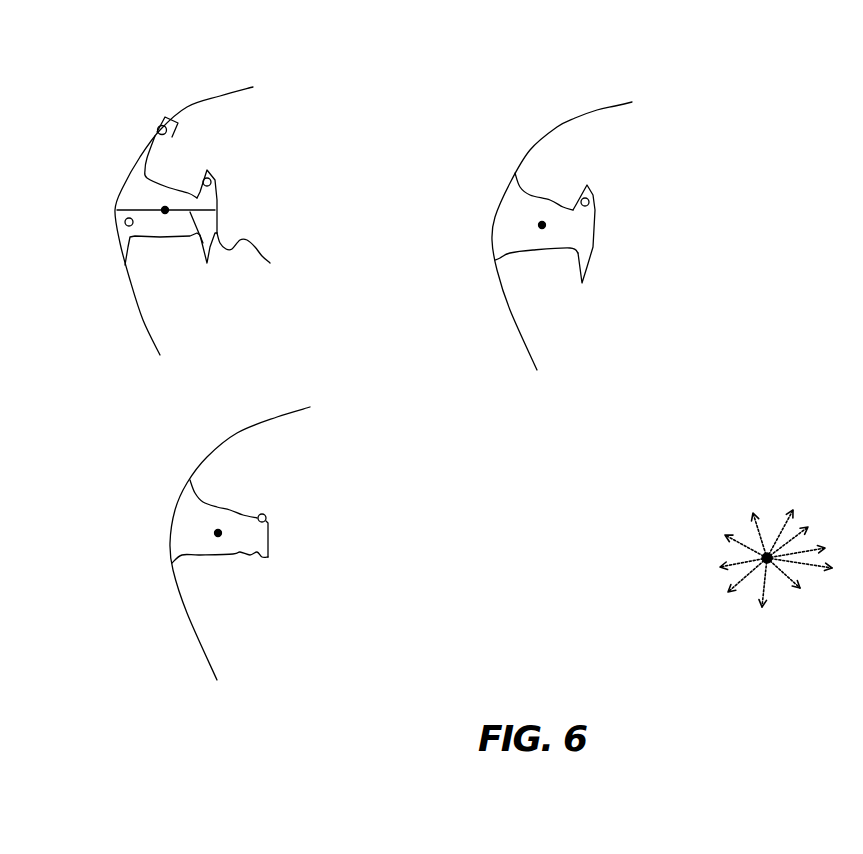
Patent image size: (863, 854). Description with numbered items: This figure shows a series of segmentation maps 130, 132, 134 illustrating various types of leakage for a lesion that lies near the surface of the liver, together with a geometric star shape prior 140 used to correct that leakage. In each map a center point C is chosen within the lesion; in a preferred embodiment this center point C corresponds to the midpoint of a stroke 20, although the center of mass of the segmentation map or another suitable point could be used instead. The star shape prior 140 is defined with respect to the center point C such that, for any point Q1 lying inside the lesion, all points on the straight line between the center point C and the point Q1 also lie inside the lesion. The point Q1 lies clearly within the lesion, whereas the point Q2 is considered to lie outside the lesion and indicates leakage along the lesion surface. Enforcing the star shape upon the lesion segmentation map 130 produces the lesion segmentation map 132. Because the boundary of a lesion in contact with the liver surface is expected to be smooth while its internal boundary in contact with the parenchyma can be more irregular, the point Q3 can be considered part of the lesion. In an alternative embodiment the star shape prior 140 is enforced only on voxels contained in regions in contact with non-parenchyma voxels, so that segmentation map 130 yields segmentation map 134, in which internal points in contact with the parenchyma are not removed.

The lesion segmentation map 130 is at (93, 127).
The lesion segmentation map 132 is at (159, 460).
The segmentation map 134 is at (483, 162).
The star shape prior 140 is at (767, 479).
The stroke 20 is at (250, 260).
The point Q1 is at (126, 225).
The point Q2 is at (161, 125).
The point Q3 is at (211, 180).
The center point C is at (163, 209).